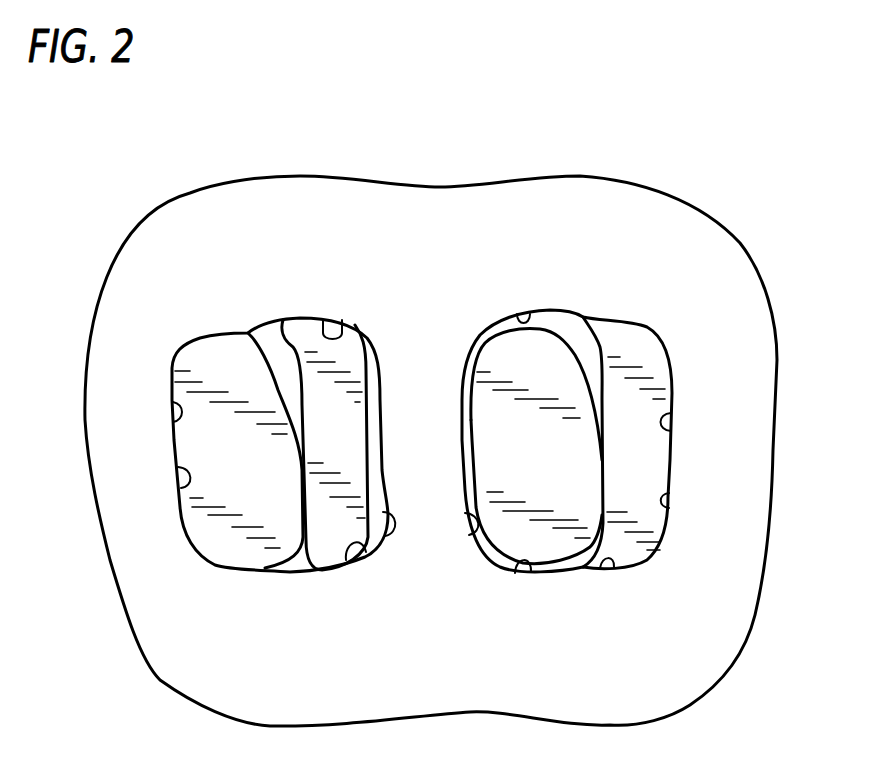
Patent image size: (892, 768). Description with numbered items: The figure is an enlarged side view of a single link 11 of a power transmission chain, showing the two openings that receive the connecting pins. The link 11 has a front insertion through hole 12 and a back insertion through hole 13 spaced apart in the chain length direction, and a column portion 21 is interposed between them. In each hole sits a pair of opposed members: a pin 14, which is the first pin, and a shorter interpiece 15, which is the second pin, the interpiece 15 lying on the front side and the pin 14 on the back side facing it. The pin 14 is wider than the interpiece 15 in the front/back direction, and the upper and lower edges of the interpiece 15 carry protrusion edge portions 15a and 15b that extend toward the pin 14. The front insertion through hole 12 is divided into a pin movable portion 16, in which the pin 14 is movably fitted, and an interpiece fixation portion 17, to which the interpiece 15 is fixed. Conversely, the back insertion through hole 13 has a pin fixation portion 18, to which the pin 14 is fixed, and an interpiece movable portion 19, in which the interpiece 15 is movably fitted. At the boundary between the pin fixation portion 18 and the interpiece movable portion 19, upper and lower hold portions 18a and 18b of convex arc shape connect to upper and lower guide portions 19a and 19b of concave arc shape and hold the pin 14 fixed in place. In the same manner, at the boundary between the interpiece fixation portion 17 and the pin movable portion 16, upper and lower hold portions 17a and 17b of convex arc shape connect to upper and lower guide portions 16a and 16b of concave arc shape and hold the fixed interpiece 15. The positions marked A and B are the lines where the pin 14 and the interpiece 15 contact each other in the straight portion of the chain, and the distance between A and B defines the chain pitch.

The link 11 is at (770, 292).
The front insertion through hole 12 is at (658, 423).
The back insertion through hole 13 is at (185, 490).
The pin 14 is at (203, 527).
The interpiece 15 is at (340, 442).
The upper protrusion edge portion 15a is at (296, 327).
The lower protrusion edge portion 15b is at (310, 553).
The pin movable portion 16 is at (477, 533).
The upper guide portion 16a is at (528, 317).
The lower guide portion 16b is at (530, 580).
The interpiece fixation portion 17 is at (670, 493).
The upper hold portion 17a is at (583, 313).
The lower hold portion 17b is at (587, 573).
The pin fixation portion 18 is at (177, 420).
The upper hold portion 18a is at (250, 322).
The lower hold portion 18b is at (273, 575).
The interpiece movable portion 19 is at (380, 530).
The upper guide portion 19a is at (347, 317).
The lower guide portion 19b is at (347, 540).
The column portion 21 is at (423, 378).
The contact line A is at (300, 483).
The contact line B is at (604, 488).